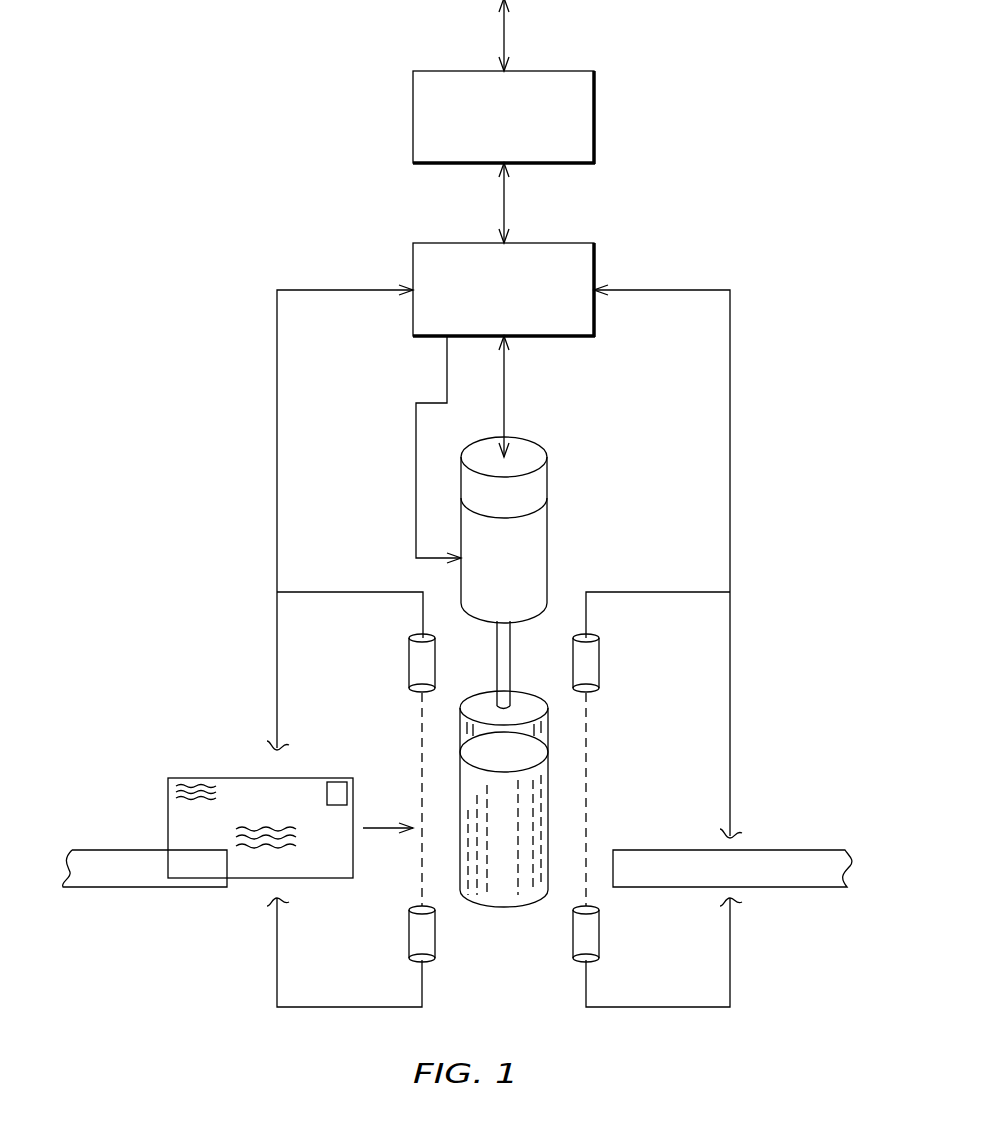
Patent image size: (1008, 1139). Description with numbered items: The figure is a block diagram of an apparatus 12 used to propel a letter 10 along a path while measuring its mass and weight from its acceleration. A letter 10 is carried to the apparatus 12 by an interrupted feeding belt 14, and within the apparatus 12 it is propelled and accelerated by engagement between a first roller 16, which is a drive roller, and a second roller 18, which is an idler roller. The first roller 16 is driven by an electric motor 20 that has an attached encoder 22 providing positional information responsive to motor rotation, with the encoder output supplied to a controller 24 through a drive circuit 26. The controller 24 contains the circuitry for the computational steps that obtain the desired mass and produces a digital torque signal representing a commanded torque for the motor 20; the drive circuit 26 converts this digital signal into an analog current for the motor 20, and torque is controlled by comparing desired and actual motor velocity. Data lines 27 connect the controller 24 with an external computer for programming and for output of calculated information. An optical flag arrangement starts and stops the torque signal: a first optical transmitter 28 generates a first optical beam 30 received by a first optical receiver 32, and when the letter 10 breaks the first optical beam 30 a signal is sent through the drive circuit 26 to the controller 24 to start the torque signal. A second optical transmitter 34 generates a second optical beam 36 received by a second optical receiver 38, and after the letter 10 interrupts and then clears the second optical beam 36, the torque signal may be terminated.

The letter 10 is at (256, 778).
The apparatus 12 is at (344, 130).
The interrupted feeding belt 14 is at (133, 850).
The first roller 16 is at (536, 690).
The second roller 18 is at (500, 907).
The electric motor 20 is at (548, 541).
The encoder 22 is at (548, 477).
The controller 24 is at (595, 118).
The drive circuit 26 is at (560, 243).
The data lines 27 is at (505, 30).
The first optical transmitter 28 is at (409, 665).
The first optical beam 30 is at (419, 716).
The first optical receiver 32 is at (409, 934).
The second optical transmitter 34 is at (600, 665).
The second optical beam 36 is at (589, 716).
The second optical receiver 38 is at (600, 934).